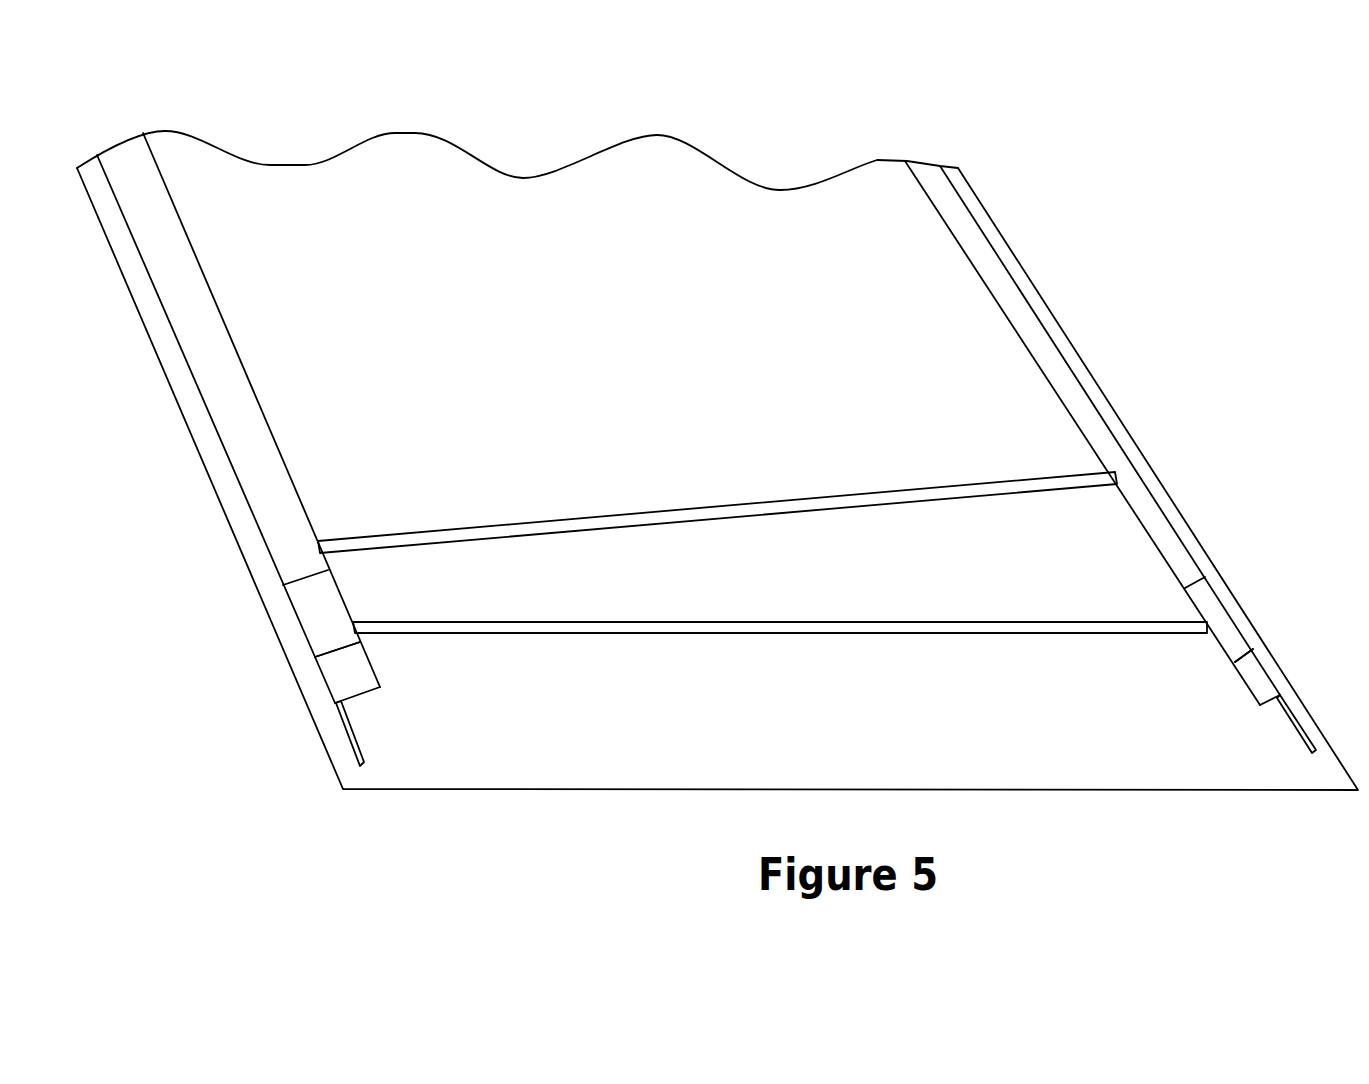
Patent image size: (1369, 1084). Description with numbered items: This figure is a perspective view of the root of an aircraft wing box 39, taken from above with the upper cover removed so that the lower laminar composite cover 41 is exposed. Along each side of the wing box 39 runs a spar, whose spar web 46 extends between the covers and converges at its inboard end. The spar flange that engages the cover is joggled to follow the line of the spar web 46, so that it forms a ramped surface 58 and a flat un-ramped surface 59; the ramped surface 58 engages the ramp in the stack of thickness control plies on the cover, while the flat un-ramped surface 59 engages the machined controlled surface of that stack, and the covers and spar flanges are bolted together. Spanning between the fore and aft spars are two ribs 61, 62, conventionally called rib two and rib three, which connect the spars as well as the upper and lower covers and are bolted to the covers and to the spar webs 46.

The wing box 39 is at (1083, 255).
The lower laminar composite cover 41 is at (352, 433).
The ramped surface 58 is at (318, 592).
The flat un-ramped surface 59 is at (358, 652).
The spar web 46 is at (337, 710).
The rib 61 is at (673, 628).
The rib 62 is at (654, 518).